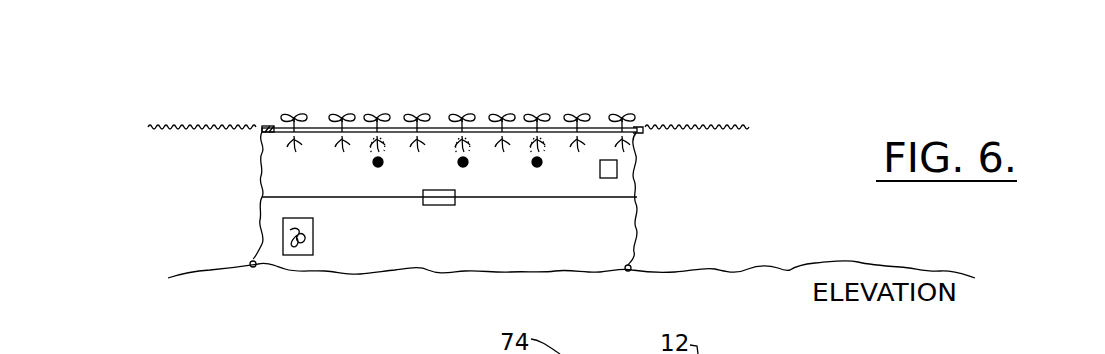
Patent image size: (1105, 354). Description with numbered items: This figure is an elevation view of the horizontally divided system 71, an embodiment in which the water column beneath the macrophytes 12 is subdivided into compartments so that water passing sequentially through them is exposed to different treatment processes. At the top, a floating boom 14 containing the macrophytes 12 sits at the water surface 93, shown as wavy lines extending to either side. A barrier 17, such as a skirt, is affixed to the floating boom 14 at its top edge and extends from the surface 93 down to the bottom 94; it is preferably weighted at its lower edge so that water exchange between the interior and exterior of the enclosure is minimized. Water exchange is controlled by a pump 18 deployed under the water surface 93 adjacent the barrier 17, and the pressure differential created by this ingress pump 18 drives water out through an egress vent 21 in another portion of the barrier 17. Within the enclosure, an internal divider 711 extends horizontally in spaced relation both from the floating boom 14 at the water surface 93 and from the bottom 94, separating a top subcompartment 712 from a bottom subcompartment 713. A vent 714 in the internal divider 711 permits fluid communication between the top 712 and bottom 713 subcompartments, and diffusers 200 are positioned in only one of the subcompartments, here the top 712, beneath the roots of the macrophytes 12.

The horizontally divided system 71 is at (166, 69).
The floating boom 14 is at (264, 127).
The macrophytes 12 is at (338, 109).
The water surface 93 is at (704, 127).
The top subcompartment 712 is at (273, 170).
The barrier 17 is at (636, 170).
The egress vent 21 is at (617, 172).
The pump 18 is at (281, 234).
The diffusers 200 is at (384, 168).
The internal divider 711 is at (472, 200).
The bottom subcompartment 713 is at (349, 255).
The vent 714 is at (436, 205).
The bottom 94 is at (786, 262).